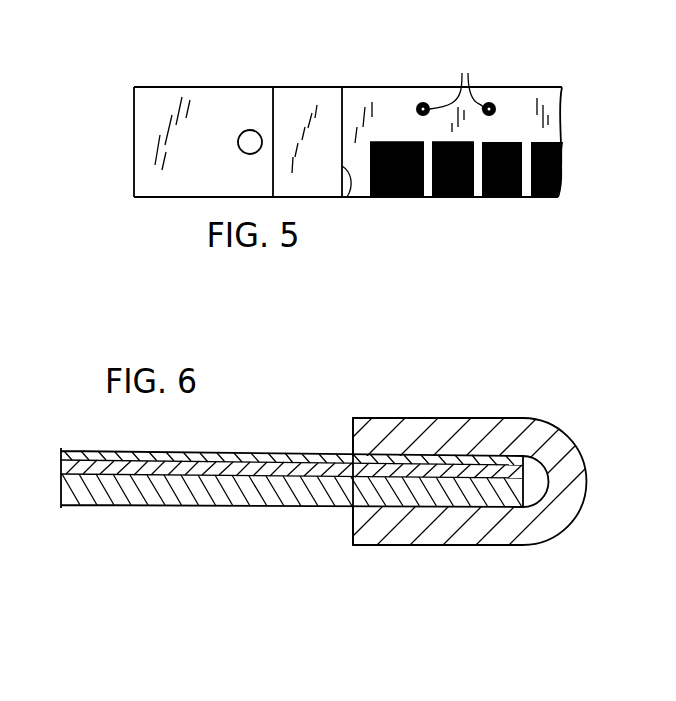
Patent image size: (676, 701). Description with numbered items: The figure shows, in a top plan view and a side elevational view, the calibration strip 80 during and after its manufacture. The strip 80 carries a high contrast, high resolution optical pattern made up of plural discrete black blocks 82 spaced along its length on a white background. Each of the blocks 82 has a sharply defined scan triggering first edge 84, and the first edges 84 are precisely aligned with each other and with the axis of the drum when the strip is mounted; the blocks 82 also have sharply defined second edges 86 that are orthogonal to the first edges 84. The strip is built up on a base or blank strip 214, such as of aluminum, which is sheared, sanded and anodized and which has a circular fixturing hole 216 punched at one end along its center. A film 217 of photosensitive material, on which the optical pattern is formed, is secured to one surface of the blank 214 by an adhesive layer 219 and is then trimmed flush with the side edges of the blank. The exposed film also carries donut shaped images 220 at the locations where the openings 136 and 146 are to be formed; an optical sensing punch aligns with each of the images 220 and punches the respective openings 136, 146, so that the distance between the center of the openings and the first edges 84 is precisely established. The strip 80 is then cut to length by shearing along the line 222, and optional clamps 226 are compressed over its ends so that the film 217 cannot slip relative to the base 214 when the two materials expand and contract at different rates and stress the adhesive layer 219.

In FIG. 5, the calibration strip 80 is at (367, 80).
In FIG. 6, the calibration strip 80 is at (209, 443).
In FIG. 5, the blocks 82 is at (407, 197).
In FIG. 5, the first edges 84 is at (440, 142).
In FIG. 5, the second edges 86 is at (479, 142).
In FIG. 5, the opening 136 is at (425, 100).
In FIG. 5, the opening 146 is at (503, 97).
In FIG. 5, the blank strip 214 is at (164, 182).
In FIG. 6, the blank strip 214 is at (273, 508).
In FIG. 5, the fixturing hole 216 is at (250, 131).
In FIG. 6, the film 217 is at (313, 455).
In FIG. 6, the adhesive layer 219 is at (247, 460).
In FIG. 5, the donut shaped images 220 is at (457, 81).
In FIG. 5, the line 222 is at (347, 197).
In FIG. 6, the clamps 226 is at (557, 433).